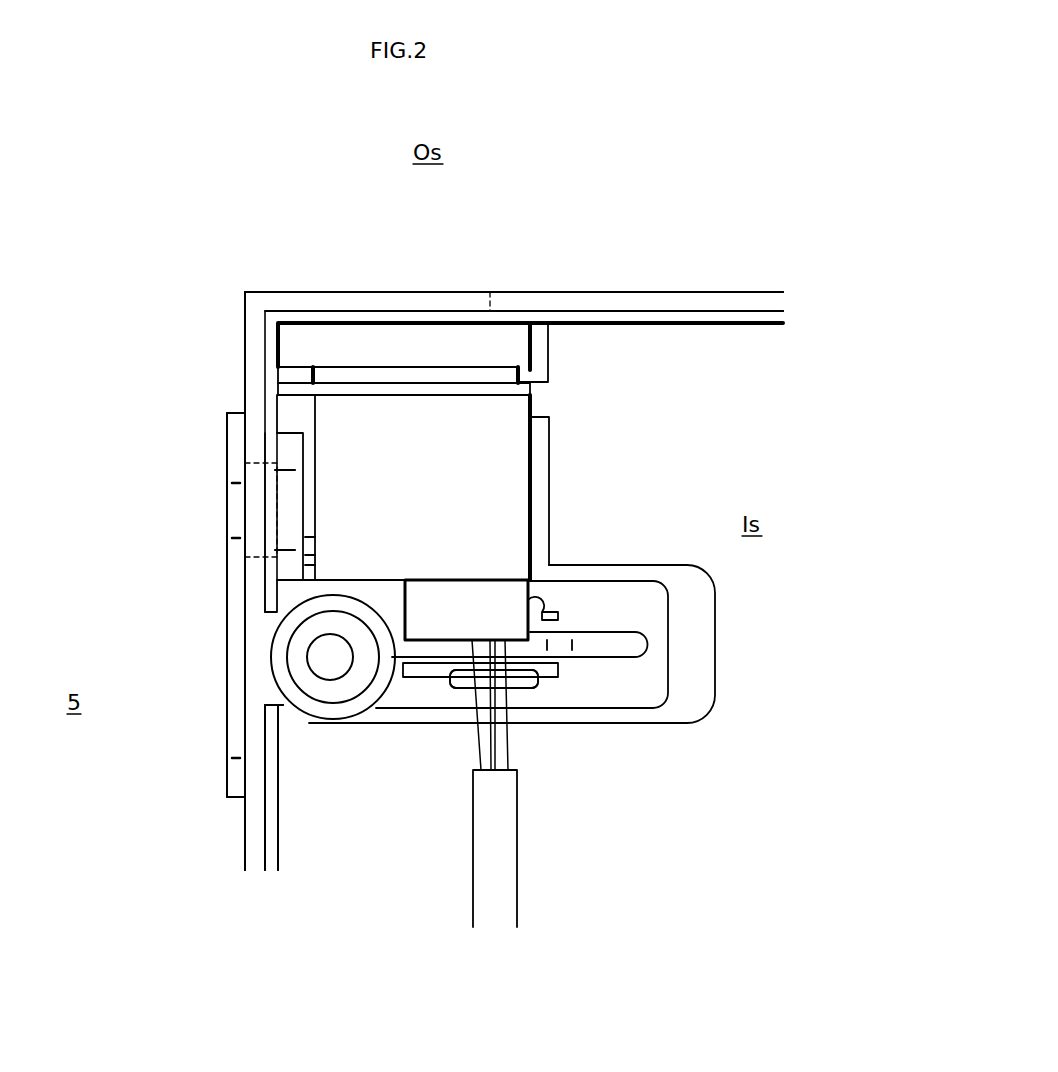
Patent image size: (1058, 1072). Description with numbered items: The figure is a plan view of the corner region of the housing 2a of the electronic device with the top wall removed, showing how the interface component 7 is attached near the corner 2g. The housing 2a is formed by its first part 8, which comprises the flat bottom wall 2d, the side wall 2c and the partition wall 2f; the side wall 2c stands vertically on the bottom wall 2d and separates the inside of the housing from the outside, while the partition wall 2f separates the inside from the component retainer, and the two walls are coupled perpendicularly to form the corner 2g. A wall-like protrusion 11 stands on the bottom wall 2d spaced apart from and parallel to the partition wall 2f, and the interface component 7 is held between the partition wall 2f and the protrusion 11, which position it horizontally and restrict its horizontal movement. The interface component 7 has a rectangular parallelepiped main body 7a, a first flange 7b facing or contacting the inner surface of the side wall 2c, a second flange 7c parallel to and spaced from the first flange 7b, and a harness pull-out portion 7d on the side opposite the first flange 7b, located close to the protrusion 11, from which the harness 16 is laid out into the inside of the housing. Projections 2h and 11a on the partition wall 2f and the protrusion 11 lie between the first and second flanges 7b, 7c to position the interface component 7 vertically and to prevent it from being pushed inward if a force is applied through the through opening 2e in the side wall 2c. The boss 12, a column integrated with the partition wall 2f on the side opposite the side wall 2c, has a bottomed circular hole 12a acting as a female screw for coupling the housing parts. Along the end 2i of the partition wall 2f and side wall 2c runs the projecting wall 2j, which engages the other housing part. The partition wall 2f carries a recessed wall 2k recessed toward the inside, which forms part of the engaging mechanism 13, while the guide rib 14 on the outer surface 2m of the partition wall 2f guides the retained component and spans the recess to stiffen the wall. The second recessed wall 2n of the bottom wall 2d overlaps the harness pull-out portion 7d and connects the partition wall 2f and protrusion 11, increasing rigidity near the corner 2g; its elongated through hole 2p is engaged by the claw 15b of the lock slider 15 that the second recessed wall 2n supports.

The housing 2a is at (698, 177).
The side wall 2c is at (623, 290).
The bottom wall 2d is at (740, 353).
The through opening 2e is at (317, 306).
The partition wall 2f is at (243, 443).
The corner 2g is at (245, 292).
The projection 2h is at (288, 373).
The end 2i is at (257, 572).
The projecting wall 2j is at (272, 737).
The recessed wall 2k is at (265, 455).
The outer surface 2m is at (243, 335).
The second recessed wall 2n is at (636, 712).
The through hole 2p is at (557, 618).
The interface component 7 is at (536, 452).
The main body 7a is at (500, 513).
The first flange 7b is at (422, 338).
The second flange 7c is at (368, 388).
The harness pull-out portion 7d is at (503, 595).
The first part 8 is at (243, 847).
The protrusion 11 is at (540, 433).
The projection 11a is at (523, 365).
The boss 12 is at (309, 727).
The bottomed circular hole 12a is at (318, 648).
The engaging mechanism 13 is at (262, 518).
The guide rib 14 is at (232, 782).
The lock slider 15 is at (534, 694).
The claw 15b is at (468, 690).
The harness 16 is at (505, 885).